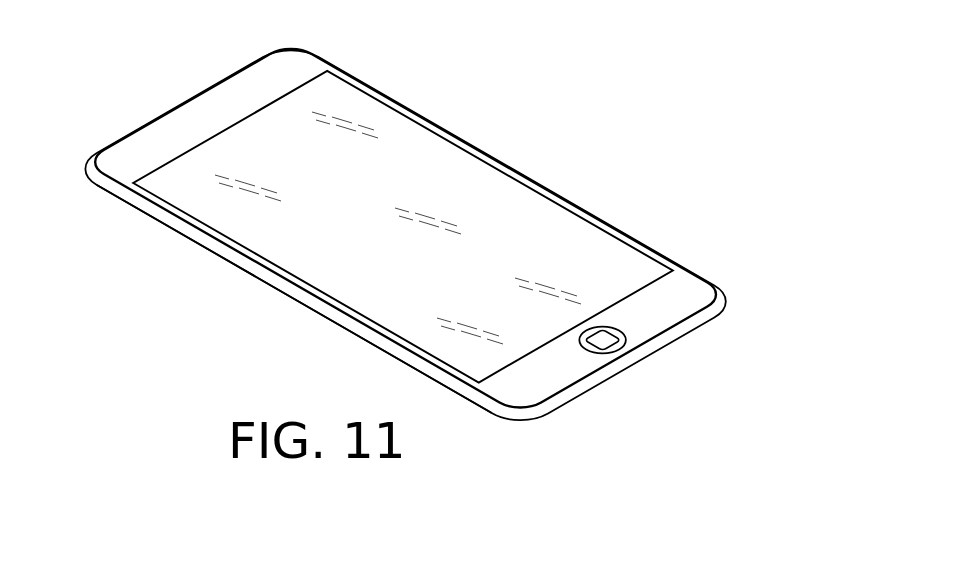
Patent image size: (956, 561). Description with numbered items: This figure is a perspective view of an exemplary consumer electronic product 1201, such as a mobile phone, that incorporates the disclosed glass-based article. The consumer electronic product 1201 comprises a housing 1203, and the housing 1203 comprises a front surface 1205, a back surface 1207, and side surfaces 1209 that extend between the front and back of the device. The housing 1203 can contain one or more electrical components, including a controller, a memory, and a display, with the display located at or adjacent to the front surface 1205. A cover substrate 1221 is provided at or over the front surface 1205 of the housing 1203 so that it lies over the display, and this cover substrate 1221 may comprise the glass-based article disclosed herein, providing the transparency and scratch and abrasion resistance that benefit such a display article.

The consumer electronic product 1201 is at (536, 112).
The housing 1203 is at (139, 136).
The front surface 1205 is at (677, 300).
The back surface 1207 is at (222, 266).
The side surfaces 1209 is at (310, 303).
The cover substrate 1221 is at (543, 210).